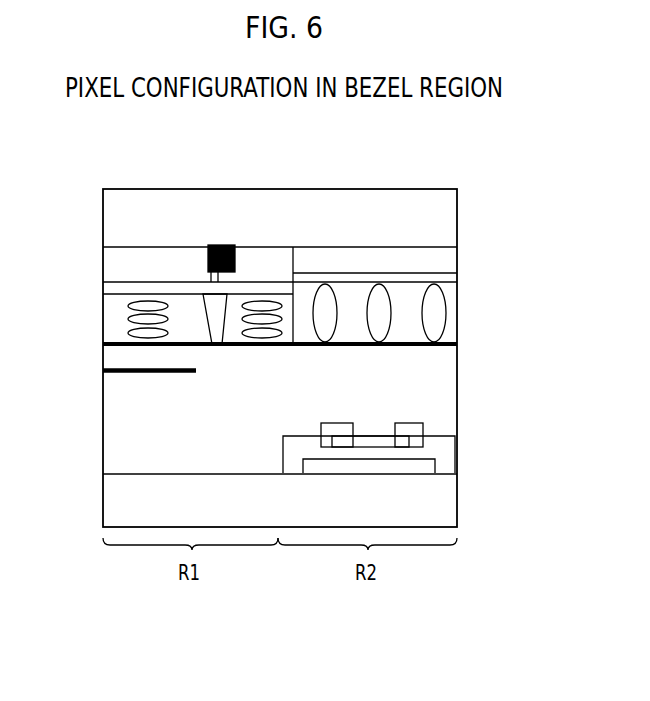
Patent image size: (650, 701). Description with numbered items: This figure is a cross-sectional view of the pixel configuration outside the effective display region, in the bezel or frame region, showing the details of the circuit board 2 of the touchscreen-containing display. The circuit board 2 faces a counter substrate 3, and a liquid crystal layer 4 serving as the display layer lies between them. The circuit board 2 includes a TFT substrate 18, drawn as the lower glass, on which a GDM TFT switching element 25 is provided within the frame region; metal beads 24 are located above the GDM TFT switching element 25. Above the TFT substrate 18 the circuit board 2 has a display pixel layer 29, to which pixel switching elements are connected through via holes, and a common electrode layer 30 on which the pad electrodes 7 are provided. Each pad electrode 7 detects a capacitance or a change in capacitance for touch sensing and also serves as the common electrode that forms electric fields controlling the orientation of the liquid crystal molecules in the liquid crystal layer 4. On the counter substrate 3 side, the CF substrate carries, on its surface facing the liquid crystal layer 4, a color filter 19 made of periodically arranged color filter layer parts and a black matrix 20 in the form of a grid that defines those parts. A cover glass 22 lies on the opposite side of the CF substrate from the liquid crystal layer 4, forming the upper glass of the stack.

The circuit board 2 is at (497, 457).
The counter substrate 3 is at (103, 218).
The liquid crystal layer 4 is at (103, 312).
The pad electrode 7 is at (128, 348).
The TFT substrate 18 is at (458, 497).
The color filter 19 is at (128, 243).
The black matrix 20 is at (223, 245).
The cover glass 22 is at (458, 203).
The metal beads 24 is at (446, 317).
The GDM TFT switching element 25 is at (428, 430).
The display pixel layer 29 is at (103, 371).
The common electrode layer 30 is at (103, 343).